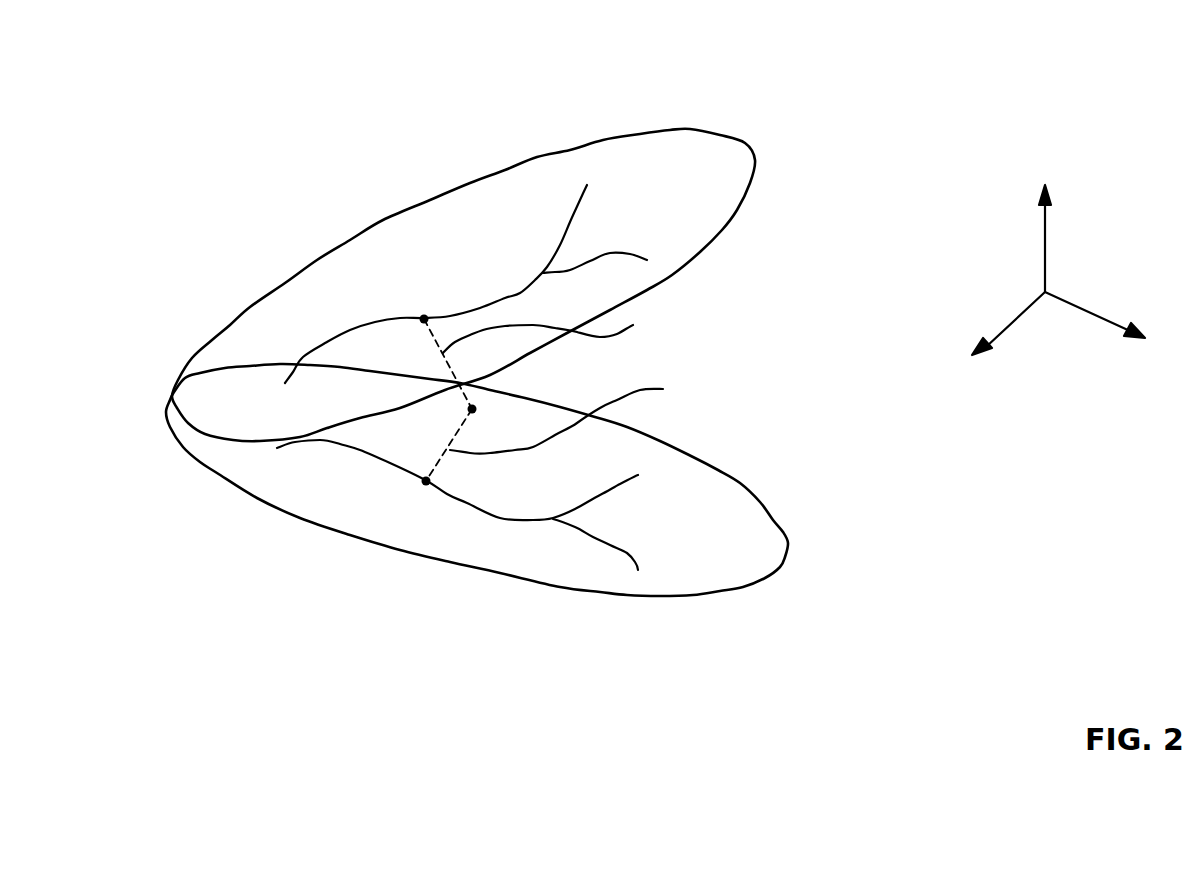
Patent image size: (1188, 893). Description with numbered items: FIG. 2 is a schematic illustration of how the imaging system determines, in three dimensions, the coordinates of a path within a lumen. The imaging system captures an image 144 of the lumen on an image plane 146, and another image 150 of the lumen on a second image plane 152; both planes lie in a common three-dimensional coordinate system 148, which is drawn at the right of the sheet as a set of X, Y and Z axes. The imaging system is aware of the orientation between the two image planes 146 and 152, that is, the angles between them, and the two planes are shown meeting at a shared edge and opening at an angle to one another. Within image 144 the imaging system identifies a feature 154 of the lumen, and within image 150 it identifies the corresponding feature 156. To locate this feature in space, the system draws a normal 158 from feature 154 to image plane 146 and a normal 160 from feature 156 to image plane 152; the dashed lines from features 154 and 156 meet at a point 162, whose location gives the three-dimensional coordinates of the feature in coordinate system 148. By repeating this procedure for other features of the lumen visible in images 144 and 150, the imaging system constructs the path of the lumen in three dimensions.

The image 144 is at (570, 223).
The image plane 146 is at (685, 130).
The three-dimensional coordinate system 148 is at (1050, 140).
The image 150 is at (520, 522).
The image plane 152 is at (740, 482).
The feature 154 is at (424, 318).
The feature 156 is at (426, 481).
The normal 158 is at (559, 329).
The normal 160 is at (576, 417).
The point 162 is at (472, 409).